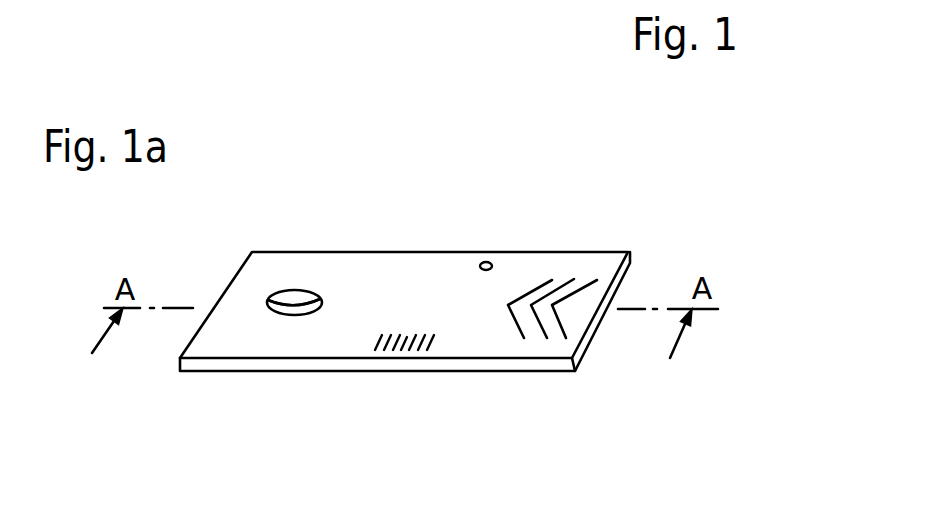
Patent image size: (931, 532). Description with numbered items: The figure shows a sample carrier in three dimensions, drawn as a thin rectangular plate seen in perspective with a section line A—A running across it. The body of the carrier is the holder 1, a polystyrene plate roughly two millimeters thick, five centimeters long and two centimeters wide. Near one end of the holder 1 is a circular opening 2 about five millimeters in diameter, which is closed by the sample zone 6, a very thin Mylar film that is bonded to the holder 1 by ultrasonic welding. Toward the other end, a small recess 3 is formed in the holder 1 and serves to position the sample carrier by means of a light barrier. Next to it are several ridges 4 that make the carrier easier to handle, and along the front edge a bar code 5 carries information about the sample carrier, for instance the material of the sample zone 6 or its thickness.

The holder 1 is at (413, 268).
The opening 2 is at (297, 289).
The recess 3 is at (488, 262).
The ridges 4 is at (563, 283).
The bar code 5 is at (400, 350).
The sample zone 6 is at (296, 310).